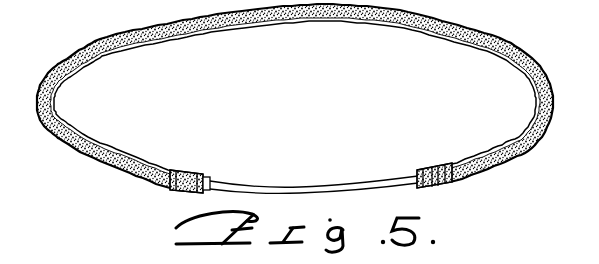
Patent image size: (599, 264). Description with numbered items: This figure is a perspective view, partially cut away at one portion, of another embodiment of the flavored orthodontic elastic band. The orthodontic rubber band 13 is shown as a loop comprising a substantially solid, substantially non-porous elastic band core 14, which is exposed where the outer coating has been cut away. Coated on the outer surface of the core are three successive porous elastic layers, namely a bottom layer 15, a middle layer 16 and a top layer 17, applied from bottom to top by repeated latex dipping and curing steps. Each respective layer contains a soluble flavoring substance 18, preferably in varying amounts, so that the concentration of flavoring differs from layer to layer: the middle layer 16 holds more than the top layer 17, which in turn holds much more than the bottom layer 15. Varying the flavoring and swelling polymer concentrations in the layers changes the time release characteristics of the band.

The orthodontic rubber band 13 is at (118, 178).
The elastic band core 14 is at (300, 187).
The bottom porous elastic layer 15 is at (427, 175).
The middle porous elastic layer 16 is at (443, 186).
The top porous elastic layer 17 is at (482, 157).
The soluble flavoring substance 18 is at (513, 158).